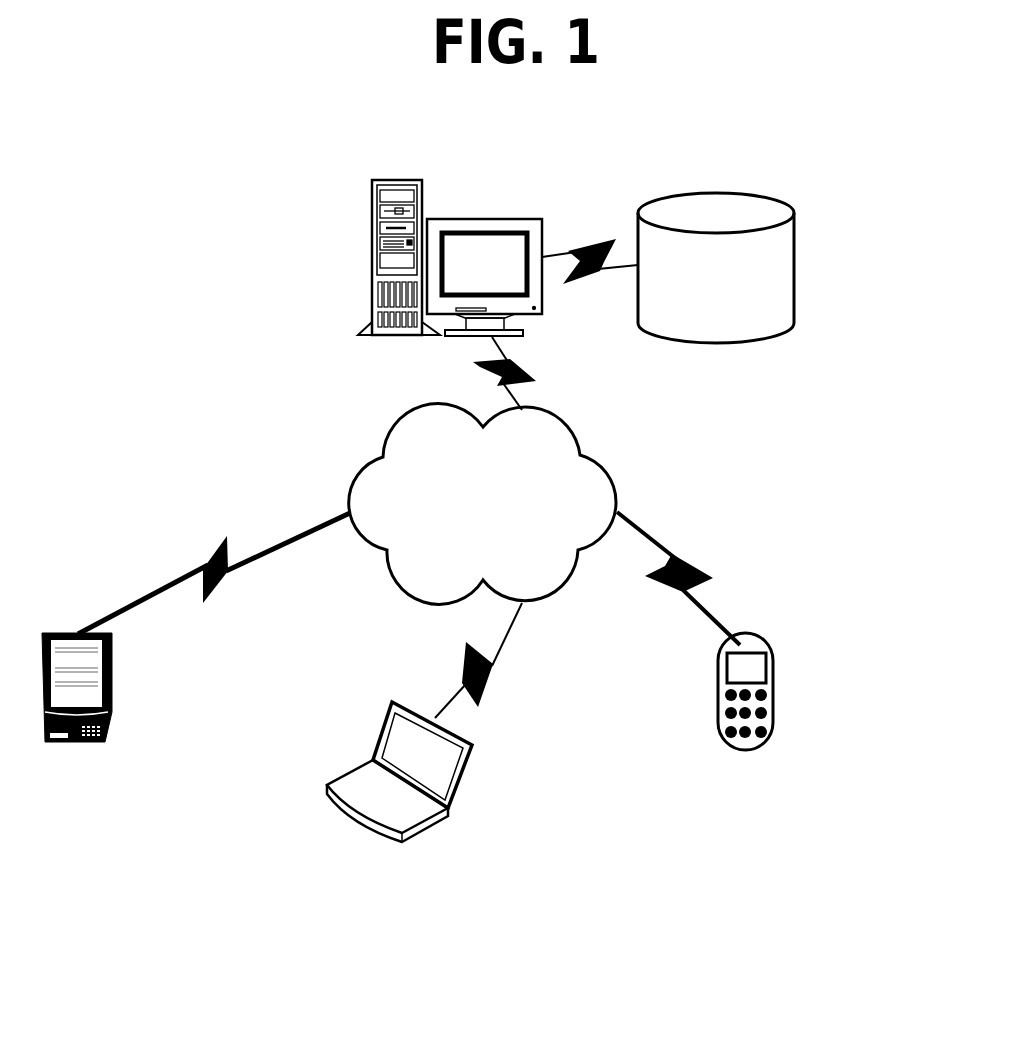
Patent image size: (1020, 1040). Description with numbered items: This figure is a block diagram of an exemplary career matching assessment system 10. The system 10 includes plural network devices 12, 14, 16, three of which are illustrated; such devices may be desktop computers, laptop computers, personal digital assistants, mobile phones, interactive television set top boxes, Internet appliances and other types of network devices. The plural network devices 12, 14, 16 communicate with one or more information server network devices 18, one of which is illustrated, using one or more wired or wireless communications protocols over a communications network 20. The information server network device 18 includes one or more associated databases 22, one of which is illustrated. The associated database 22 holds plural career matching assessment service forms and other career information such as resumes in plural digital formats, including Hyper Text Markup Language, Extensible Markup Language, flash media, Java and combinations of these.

The career matching assessment system 10 is at (839, 173).
The network device 12 is at (112, 688).
The network device 14 is at (430, 831).
The network device 16 is at (773, 695).
The information server network device 18 is at (483, 220).
The communications network 20 is at (590, 457).
The associated database 22 is at (794, 262).